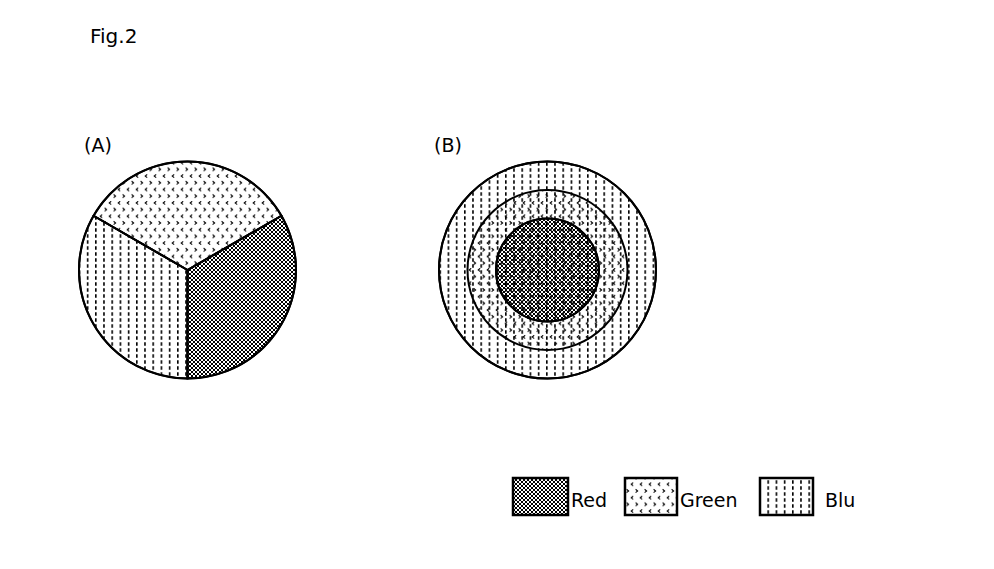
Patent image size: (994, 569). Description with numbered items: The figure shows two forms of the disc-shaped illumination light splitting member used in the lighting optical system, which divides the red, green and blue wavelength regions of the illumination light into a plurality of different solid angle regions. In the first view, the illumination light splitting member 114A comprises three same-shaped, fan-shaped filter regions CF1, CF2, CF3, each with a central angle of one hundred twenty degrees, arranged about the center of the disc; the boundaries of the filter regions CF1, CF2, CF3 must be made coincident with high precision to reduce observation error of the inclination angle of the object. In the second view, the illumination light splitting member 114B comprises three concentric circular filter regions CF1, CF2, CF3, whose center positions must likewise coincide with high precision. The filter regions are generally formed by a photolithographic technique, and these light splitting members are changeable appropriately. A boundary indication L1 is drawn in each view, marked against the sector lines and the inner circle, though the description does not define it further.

The filter region CF1 is at (93, 278).
The filter region CF2 is at (185, 178).
The filter region CF3 is at (282, 260).
The boundary line between color filters L1 is at (197, 263).
The illumination light splitting member 114A is at (248, 168).
The illumination light splitting member 114B is at (610, 168).